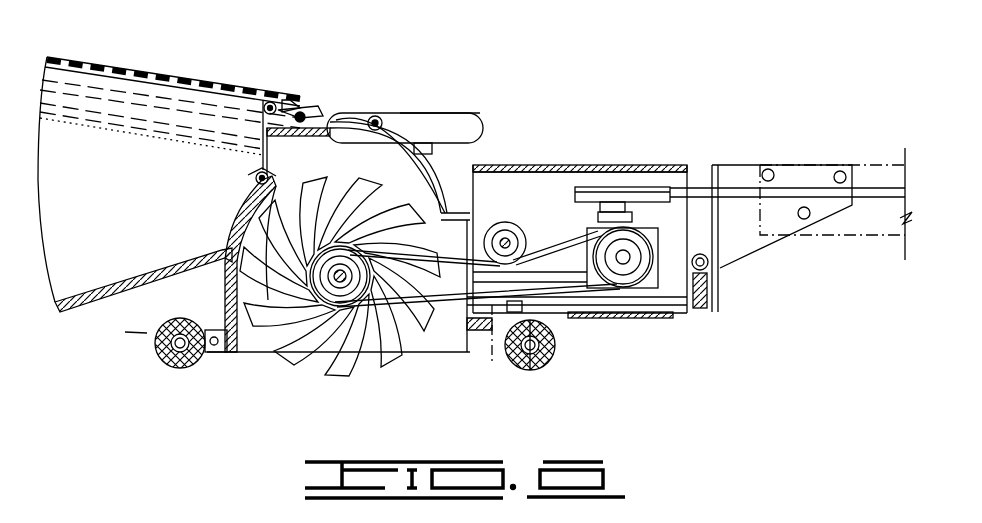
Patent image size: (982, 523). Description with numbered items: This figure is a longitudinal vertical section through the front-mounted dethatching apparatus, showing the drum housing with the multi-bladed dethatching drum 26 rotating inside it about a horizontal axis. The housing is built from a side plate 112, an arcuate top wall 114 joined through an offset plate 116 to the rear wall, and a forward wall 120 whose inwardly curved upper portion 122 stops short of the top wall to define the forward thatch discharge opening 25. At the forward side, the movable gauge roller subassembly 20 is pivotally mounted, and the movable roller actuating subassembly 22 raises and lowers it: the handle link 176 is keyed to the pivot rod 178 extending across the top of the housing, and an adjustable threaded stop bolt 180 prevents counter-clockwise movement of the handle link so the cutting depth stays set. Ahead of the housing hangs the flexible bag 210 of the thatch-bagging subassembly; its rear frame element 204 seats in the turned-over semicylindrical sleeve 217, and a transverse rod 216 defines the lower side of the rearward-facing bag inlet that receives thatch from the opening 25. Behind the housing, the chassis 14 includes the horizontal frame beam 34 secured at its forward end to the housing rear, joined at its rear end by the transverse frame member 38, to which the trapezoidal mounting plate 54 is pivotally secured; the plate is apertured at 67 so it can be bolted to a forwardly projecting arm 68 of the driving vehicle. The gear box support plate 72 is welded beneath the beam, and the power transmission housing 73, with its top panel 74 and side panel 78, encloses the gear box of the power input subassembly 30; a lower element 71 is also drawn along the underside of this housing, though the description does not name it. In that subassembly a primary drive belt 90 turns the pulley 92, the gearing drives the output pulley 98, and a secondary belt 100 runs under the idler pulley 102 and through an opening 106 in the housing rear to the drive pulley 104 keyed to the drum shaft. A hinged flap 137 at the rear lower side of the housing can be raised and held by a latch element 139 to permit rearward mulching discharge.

The chassis 14 is at (700, 328).
The movable gauge roller subassembly 20 is at (172, 380).
The movable roller actuating subassembly 22 is at (166, 357).
The thatch discharge opening 25 is at (266, 147).
The multi-bladed dethatching drum 26 is at (290, 372).
The power input subassembly 30 is at (546, 175).
The frame beam 34 is at (553, 308).
The transverse frame member 38 is at (713, 290).
The mounting plate 54 is at (735, 172).
The aperture 67 is at (765, 169).
The forwardly projecting arm 68 is at (860, 215).
The bottom plate 71 is at (660, 318).
The gear box support plate 72 is at (588, 230).
The power transmission housing 73 is at (650, 158).
The top panel 74 is at (607, 167).
The side panel 78 is at (546, 199).
The primary drive belt 90 is at (875, 196).
The pulley 92 is at (580, 185).
The pulley 98 is at (617, 278).
The secondary belt 100 is at (548, 346).
The idler pulley 102 is at (493, 223).
The drive pulley 104 is at (336, 306).
The opening 106 is at (430, 336).
The side plate 112 is at (353, 128).
The arcuate top wall 114 is at (397, 147).
The offset plate 116 is at (458, 205).
The forward wall 120 is at (246, 290).
The inwardly curved upper portion 122 is at (290, 182).
The hinged flap 137 is at (492, 365).
The latch element 139 is at (528, 350).
The handle link 176 is at (463, 128).
The pivot rod 178 is at (388, 118).
The threaded stop bolt 180 is at (428, 130).
The rear frame element 204 is at (297, 100).
The flexible bag 210 is at (96, 306).
The transverse rod 216 is at (100, 127).
The semicylindrical sleeve 217 is at (266, 104).